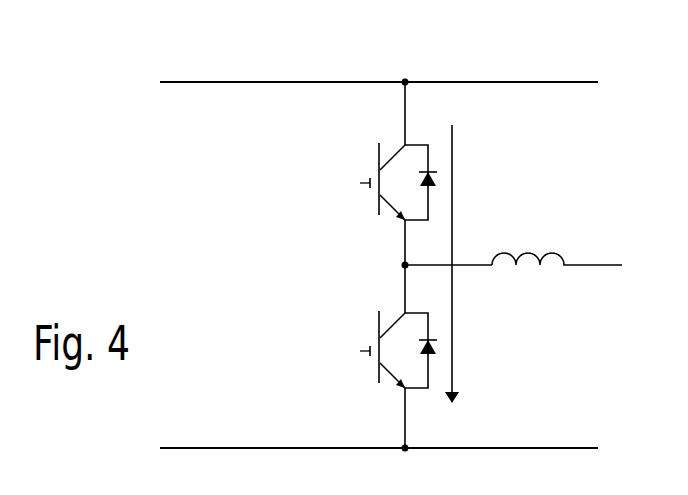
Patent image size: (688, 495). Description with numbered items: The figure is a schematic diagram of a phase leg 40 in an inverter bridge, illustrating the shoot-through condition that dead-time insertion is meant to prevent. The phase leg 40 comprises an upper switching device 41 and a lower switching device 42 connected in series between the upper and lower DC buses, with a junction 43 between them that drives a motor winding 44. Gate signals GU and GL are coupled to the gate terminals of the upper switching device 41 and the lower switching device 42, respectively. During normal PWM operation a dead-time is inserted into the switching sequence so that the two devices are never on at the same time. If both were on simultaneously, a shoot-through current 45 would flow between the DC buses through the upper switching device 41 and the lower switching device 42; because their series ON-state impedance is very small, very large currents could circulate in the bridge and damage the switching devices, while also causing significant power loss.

The phase leg 40 is at (405, 80).
The upper switching device 41 is at (377, 151).
The lower switching device 42 is at (377, 320).
The junction 43 is at (404, 264).
The motor winding 44 is at (531, 255).
The shoot-through current 45 is at (453, 205).